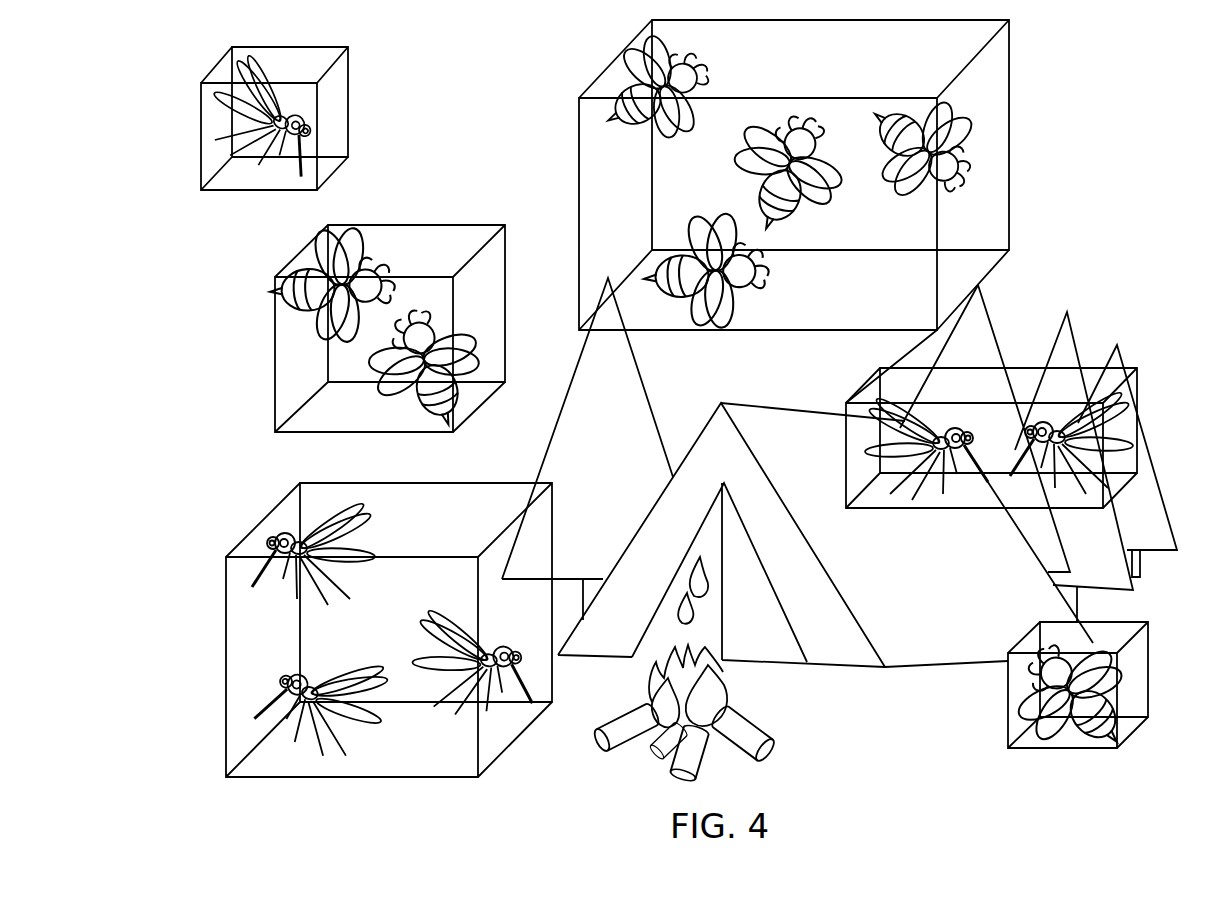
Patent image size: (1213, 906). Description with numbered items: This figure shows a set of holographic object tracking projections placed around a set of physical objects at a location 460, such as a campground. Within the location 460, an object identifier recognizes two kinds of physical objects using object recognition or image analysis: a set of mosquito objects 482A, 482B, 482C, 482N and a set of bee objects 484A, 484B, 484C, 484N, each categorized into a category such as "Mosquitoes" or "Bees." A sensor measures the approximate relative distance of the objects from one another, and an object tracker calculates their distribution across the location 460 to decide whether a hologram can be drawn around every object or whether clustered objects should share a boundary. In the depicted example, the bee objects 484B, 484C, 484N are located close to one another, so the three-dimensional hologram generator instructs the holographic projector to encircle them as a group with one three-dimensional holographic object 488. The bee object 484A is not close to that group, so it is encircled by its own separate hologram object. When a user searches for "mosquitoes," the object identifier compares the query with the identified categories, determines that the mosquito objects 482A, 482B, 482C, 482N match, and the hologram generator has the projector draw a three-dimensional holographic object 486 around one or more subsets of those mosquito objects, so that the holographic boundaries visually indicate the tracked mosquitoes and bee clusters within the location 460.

The location 460 is at (887, 696).
The mosquito object 482A is at (303, 107).
The mosquito object 482B is at (278, 536).
The mosquito object 482C is at (362, 730).
The mosquito object 482N is at (422, 625).
The bee object 484A is at (1022, 707).
The bee object 484B is at (628, 90).
The bee object 484C is at (755, 272).
The bee object 484N is at (975, 130).
The 3-D holographic object 486 is at (236, 199).
The 3-D holographic object 488 is at (566, 149).